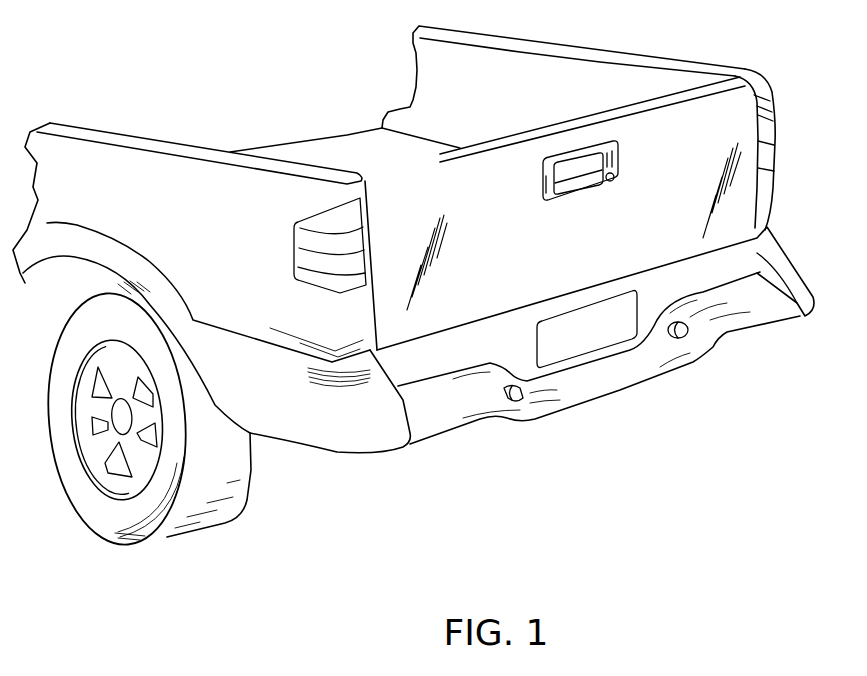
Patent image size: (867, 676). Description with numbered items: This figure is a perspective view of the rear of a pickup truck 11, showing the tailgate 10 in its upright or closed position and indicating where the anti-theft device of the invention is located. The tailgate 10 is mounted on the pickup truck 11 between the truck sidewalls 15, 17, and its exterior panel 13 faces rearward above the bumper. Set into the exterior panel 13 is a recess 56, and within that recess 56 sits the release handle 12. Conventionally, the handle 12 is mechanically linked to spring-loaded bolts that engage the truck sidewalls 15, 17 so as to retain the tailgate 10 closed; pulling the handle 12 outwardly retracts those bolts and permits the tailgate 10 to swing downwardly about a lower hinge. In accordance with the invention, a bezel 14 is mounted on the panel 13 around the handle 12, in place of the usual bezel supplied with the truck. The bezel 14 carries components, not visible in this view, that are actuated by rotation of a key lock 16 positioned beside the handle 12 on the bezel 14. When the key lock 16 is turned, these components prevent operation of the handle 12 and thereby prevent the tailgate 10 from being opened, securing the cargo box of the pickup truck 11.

The tailgate 10 is at (740, 208).
The pickup truck 11 is at (203, 122).
The release handle 12 is at (581, 185).
The exterior panel 13 is at (443, 313).
The bezel 14 is at (572, 153).
The truck sidewall 15 is at (297, 180).
The key lock 16 is at (613, 183).
The truck sidewall 17 is at (773, 110).
The recess 56 is at (558, 193).